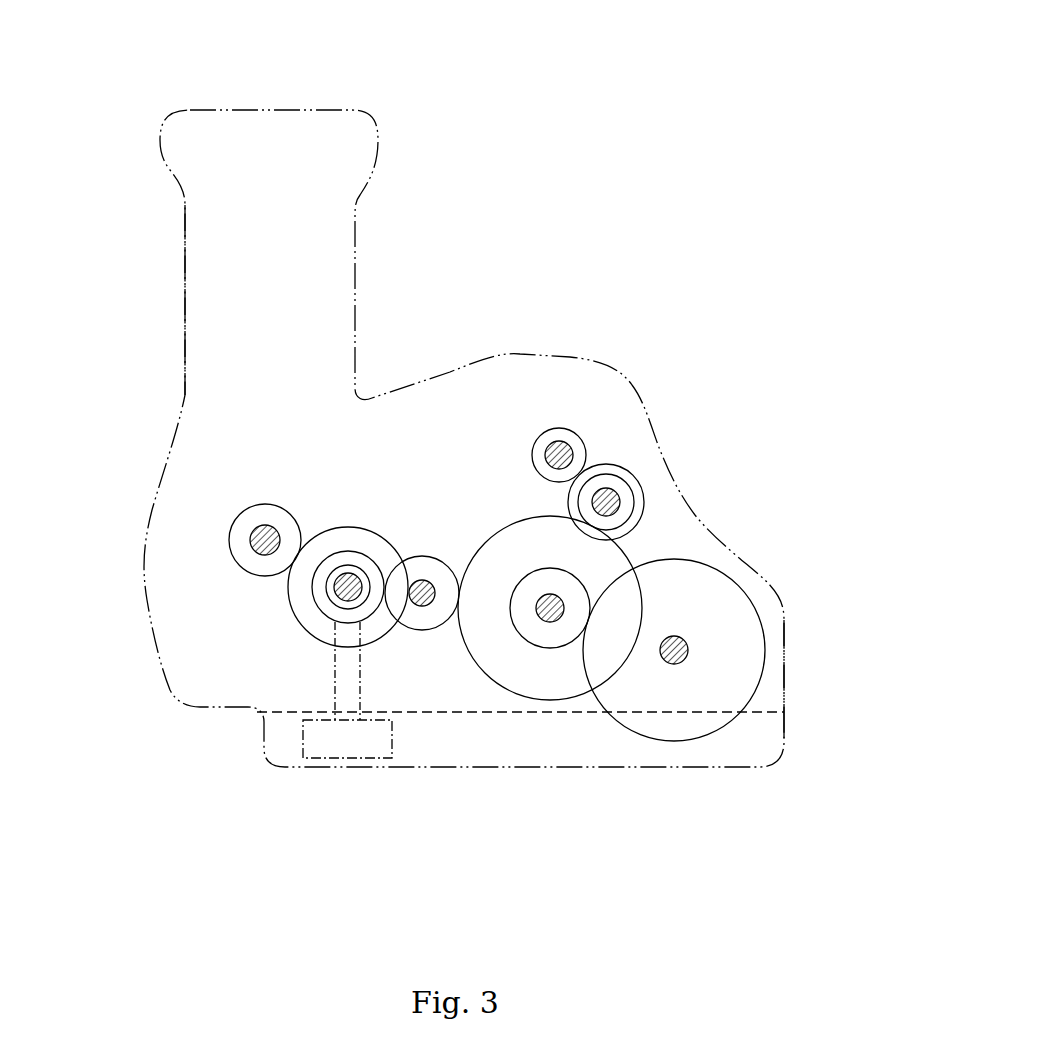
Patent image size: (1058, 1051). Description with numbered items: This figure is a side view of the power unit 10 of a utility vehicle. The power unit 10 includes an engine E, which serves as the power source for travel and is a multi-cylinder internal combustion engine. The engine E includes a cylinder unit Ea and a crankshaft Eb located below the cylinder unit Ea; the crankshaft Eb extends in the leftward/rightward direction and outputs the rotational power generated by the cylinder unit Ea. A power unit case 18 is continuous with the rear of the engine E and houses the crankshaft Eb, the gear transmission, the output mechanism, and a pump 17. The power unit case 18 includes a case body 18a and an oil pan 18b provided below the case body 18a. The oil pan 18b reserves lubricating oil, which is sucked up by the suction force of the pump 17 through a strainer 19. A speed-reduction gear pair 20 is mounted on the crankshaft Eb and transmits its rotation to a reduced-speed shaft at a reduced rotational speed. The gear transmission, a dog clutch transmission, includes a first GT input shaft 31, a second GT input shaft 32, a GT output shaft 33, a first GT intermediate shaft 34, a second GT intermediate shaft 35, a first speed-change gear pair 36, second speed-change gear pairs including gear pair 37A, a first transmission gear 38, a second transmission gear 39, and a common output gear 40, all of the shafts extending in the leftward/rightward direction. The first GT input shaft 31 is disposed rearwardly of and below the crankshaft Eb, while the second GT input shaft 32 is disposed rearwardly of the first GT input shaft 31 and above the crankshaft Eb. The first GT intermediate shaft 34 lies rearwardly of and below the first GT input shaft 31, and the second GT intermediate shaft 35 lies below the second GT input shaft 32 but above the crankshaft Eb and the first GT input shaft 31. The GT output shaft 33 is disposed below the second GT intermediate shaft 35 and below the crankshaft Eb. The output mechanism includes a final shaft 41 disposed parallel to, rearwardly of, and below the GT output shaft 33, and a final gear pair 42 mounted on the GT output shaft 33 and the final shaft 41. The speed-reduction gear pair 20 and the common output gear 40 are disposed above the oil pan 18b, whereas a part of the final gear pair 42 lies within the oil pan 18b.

The engine E is at (316, 106).
The cylinder unit Ea is at (185, 282).
The crankshaft Eb is at (266, 538).
The power unit 10 is at (562, 143).
The pump 17 is at (348, 585).
The power unit case 18 is at (875, 650).
The case body 18a is at (784, 660).
The oil pan 18b is at (784, 738).
The strainer 19 is at (345, 752).
The speed-reduction gear pair 20 is at (289, 590).
The first GT input shaft 31 is at (323, 611).
The second GT input shaft 32 is at (555, 450).
The GT output shaft 33 is at (550, 622).
The first GT intermediate shaft 34 is at (422, 590).
The second GT intermediate shaft 35 is at (612, 500).
The first speed-change gear pair 36 is at (337, 605).
The second speed-change gear pair 37A is at (600, 466).
The first transmission gear 38 is at (422, 630).
The second transmission gear 39 is at (641, 520).
The common output gear 40 is at (490, 678).
The final shaft 41 is at (674, 664).
The final gear pair 42 is at (628, 728).